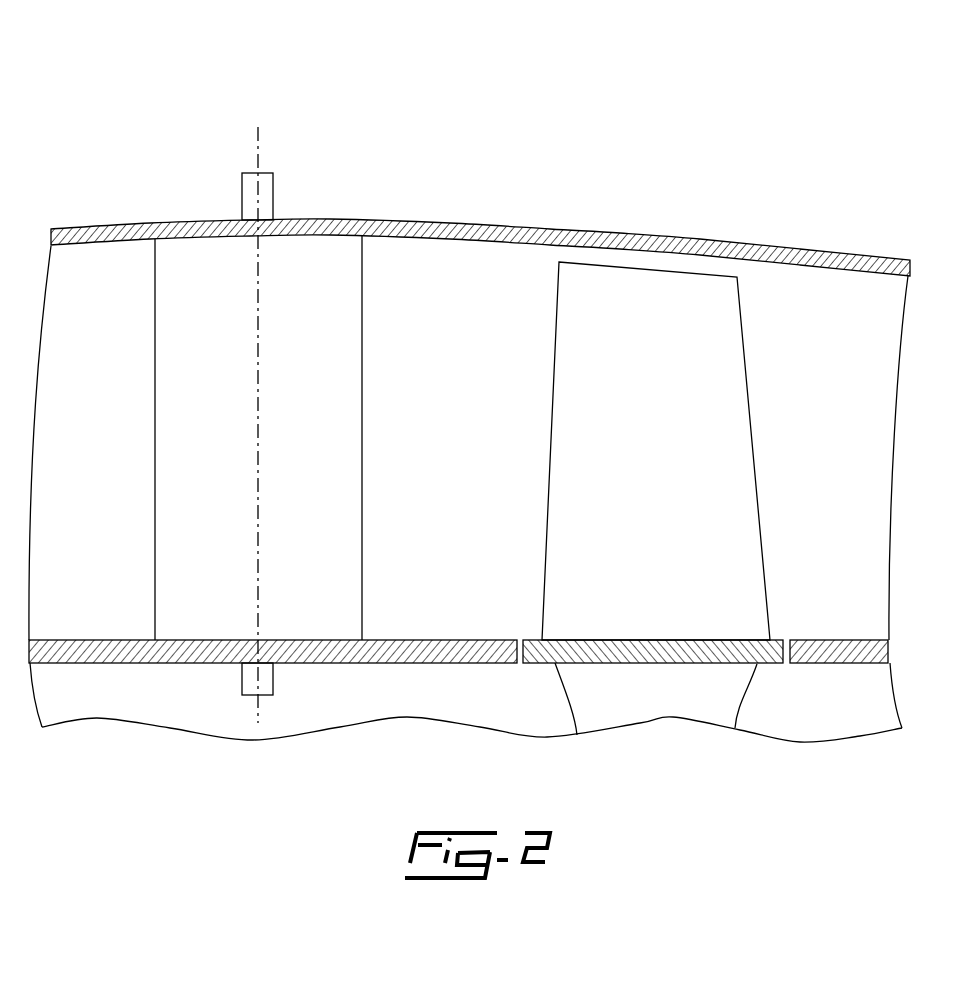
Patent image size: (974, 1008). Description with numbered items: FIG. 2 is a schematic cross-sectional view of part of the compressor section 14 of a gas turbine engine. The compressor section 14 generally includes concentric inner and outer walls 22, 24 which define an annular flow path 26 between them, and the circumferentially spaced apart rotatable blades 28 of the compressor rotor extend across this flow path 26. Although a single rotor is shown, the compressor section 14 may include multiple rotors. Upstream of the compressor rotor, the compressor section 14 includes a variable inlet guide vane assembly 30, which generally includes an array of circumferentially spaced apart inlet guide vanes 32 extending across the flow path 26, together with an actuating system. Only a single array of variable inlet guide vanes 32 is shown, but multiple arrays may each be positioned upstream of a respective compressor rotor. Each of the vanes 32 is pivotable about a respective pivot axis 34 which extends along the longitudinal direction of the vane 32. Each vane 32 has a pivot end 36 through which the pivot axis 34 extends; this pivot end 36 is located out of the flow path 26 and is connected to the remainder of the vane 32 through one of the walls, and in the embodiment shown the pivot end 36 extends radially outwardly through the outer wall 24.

The compressor section 14 is at (792, 163).
The inner wall 22 is at (847, 664).
The outer wall 24 is at (838, 248).
The annular flow path 26 is at (432, 405).
The rotatable blades 28 is at (652, 317).
The variable inlet guide vane assembly 30 is at (301, 377).
The variable inlet guide vanes 32 is at (197, 287).
The pivot axis 34 is at (258, 138).
The pivot end 36 is at (242, 183).